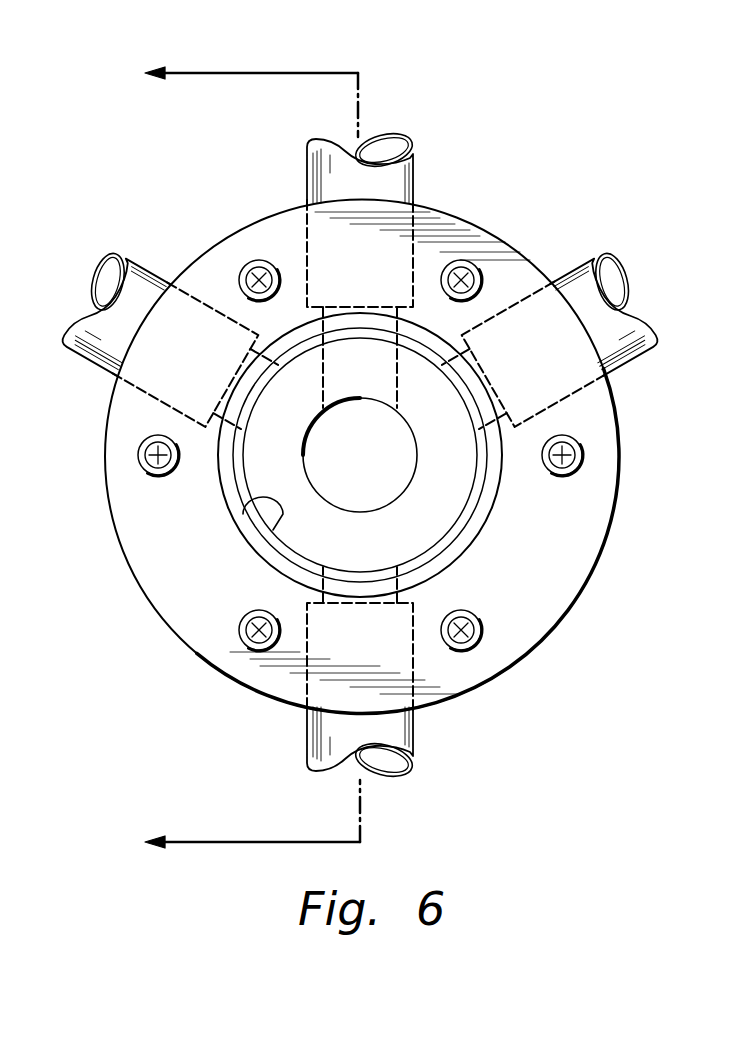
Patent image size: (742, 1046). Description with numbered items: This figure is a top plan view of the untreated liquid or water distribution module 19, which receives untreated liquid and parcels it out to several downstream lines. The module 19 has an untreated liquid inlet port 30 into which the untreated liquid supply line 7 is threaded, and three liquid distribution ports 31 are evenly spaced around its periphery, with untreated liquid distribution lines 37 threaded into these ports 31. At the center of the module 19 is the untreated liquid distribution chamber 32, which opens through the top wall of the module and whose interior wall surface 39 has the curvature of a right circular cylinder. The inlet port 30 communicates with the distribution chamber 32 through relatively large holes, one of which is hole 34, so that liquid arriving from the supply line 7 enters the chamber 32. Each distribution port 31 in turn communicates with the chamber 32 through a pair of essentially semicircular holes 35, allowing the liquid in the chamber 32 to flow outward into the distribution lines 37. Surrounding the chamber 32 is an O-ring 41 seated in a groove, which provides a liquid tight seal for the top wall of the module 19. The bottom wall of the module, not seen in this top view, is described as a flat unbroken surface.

The untreated liquid supply line 7 is at (413, 163).
The untreated liquid distribution module 19 is at (553, 686).
The untreated liquid inlet port 30 is at (415, 255).
The liquid distribution ports 31 is at (580, 395).
The untreated liquid distribution chamber 32 is at (445, 500).
The hole 34 is at (377, 471).
The semicircular holes 35 is at (542, 575).
The untreated liquid distribution lines 37 is at (105, 257).
The interior wall surface 39 is at (243, 514).
The O-ring 41 is at (223, 485).